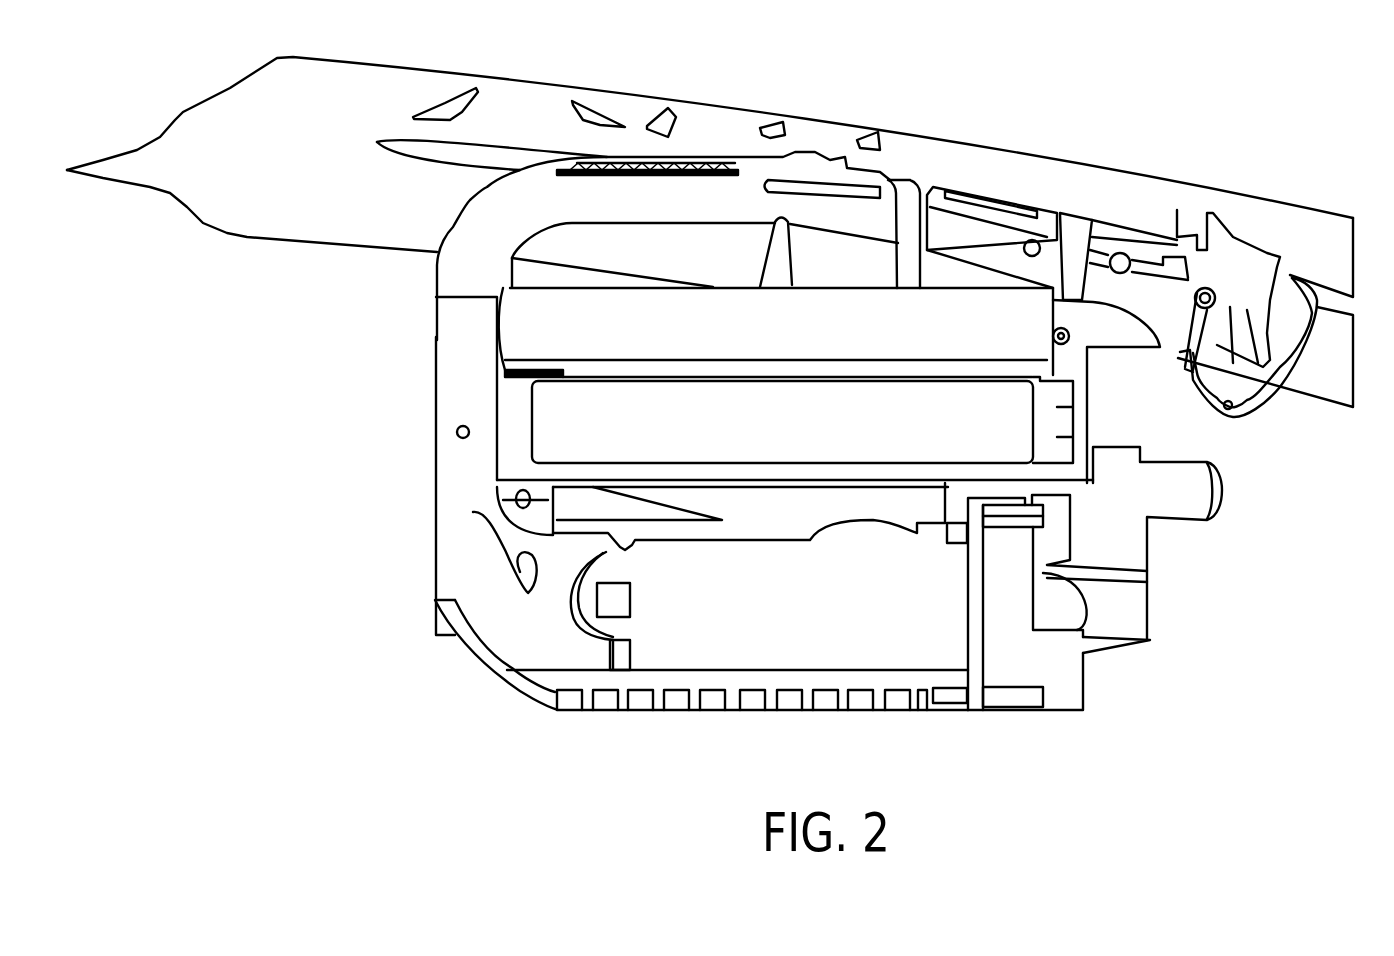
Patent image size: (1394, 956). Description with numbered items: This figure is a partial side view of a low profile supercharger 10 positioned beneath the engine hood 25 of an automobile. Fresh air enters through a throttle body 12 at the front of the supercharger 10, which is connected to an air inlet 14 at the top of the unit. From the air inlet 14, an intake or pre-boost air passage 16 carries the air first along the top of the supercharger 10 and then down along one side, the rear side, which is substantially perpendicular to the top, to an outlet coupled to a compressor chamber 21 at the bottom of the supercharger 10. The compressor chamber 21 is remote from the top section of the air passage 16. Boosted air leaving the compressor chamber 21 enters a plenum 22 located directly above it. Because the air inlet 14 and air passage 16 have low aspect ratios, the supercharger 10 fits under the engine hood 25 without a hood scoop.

The supercharger 10 is at (383, 706).
The throttle body 12 is at (1290, 538).
The air inlet 14 is at (1141, 285).
The intake air passage 16 is at (800, 317).
The compressor chamber 21 is at (663, 630).
The plenum 22 is at (563, 430).
The engine hood 25 is at (1005, 163).